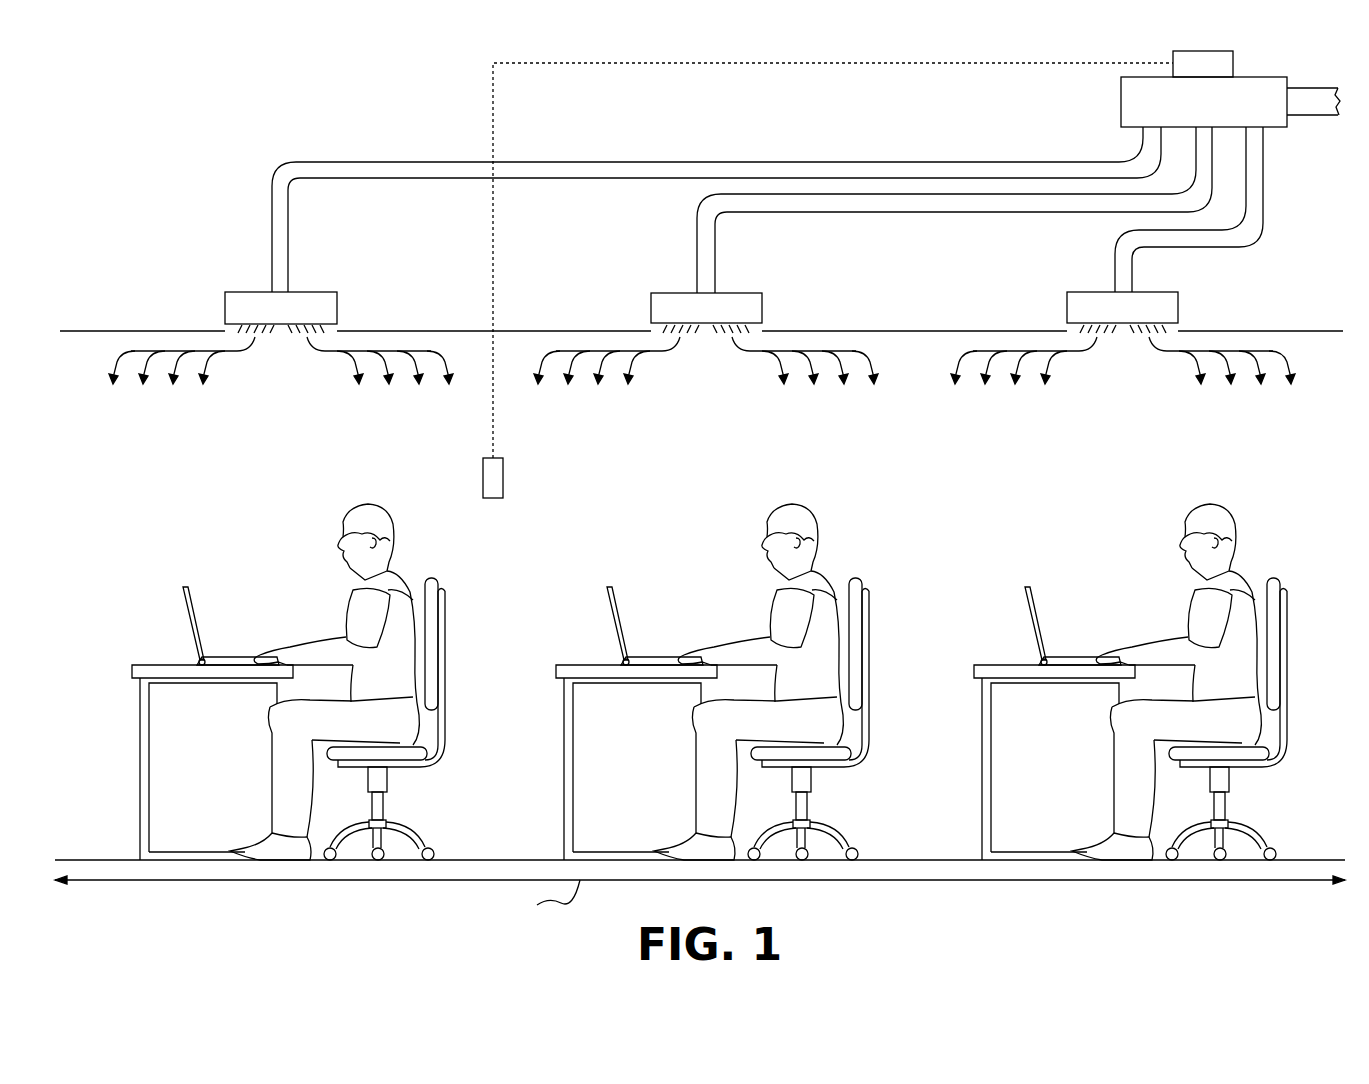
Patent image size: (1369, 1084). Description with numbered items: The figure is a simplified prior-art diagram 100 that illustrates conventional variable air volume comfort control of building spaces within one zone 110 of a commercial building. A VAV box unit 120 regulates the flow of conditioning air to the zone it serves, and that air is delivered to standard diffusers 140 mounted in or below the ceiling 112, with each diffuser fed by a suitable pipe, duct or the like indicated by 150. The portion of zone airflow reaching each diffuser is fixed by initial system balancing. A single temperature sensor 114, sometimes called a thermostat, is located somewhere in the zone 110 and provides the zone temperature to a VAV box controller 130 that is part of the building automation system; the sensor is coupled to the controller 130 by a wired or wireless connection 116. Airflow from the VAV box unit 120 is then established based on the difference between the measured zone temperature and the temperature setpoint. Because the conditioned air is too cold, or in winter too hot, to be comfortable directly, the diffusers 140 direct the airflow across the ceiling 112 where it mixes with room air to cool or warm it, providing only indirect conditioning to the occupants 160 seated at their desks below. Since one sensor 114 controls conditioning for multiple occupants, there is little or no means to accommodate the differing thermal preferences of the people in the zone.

The diagram 100 is at (326, 110).
The zone 110 is at (948, 528).
The ceiling 112 is at (917, 331).
The temperature sensor 114 is at (503, 480).
The wired or wireless connection 116 is at (745, 63).
The VAV box unit 120 is at (1222, 116).
The VAV box controller 130 is at (1233, 62).
The diffusers 140 is at (225, 312).
The duct 150 is at (272, 248).
The occupant 160 is at (347, 606).